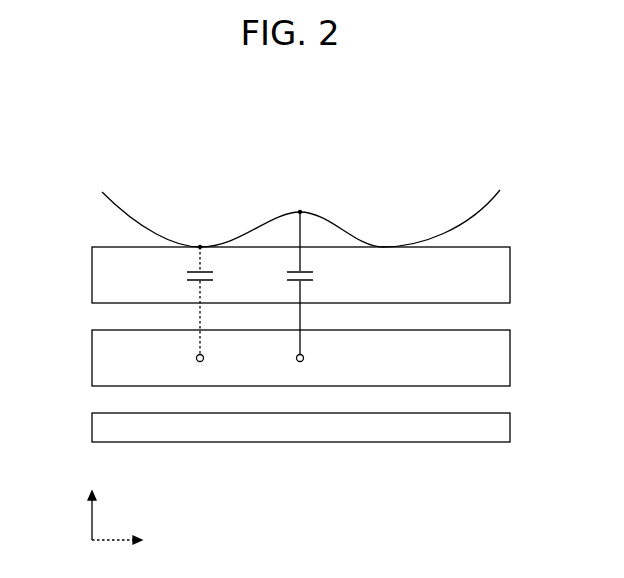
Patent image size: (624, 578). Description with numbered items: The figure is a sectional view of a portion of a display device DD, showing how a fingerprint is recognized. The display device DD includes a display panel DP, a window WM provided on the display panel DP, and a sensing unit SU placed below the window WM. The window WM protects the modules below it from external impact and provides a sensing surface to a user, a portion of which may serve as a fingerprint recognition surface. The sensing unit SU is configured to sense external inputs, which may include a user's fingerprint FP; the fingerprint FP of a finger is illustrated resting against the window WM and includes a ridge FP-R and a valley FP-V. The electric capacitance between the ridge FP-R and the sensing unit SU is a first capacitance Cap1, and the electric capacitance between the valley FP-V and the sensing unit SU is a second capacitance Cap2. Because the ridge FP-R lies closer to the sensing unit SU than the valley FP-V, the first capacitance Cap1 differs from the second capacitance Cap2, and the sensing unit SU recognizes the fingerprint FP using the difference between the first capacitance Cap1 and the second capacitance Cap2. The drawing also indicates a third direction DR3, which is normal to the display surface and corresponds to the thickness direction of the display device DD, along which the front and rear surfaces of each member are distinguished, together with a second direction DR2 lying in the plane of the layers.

The display device DD is at (528, 183).
The fingerprint FP is at (108, 204).
The ridge FP-R is at (200, 247).
The valley FP-V is at (300, 212).
The window WM is at (500, 274).
The sensing unit SU is at (500, 357).
The display panel DP is at (500, 427).
The first capacitance Cap1 is at (220, 304).
The second capacitance Cap2 is at (320, 287).
The third direction DR3 is at (90, 506).
The second direction DR2 is at (133, 541).